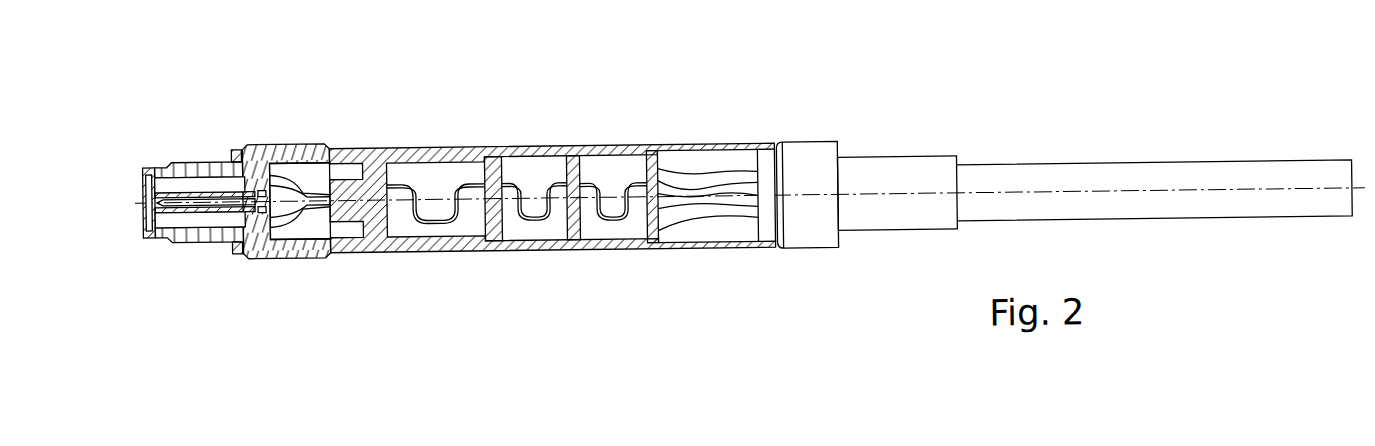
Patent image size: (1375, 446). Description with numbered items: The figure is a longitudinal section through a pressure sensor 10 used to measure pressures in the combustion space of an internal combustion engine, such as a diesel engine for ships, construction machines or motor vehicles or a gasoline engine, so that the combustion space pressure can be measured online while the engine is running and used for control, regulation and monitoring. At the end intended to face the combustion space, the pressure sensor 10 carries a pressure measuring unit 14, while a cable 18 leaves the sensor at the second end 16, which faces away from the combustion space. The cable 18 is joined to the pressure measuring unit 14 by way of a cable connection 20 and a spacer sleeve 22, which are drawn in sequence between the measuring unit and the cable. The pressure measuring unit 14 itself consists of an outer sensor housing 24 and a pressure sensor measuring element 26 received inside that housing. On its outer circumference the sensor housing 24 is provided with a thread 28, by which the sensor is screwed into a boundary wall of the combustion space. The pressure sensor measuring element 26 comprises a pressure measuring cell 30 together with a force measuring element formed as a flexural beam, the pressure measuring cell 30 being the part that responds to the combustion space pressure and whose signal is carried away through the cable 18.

The pressure sensor 10 is at (445, 130).
The pressure measuring unit 14 is at (288, 155).
The second end 16 is at (1059, 152).
The cable 18 is at (1185, 188).
The cable connection 20 is at (810, 165).
The spacer sleeve 22 is at (612, 153).
The sensor housing 24 is at (367, 275).
The pressure sensor measuring element 26 is at (207, 181).
The thread 28 is at (297, 262).
The pressure measuring cell 30 is at (178, 226).